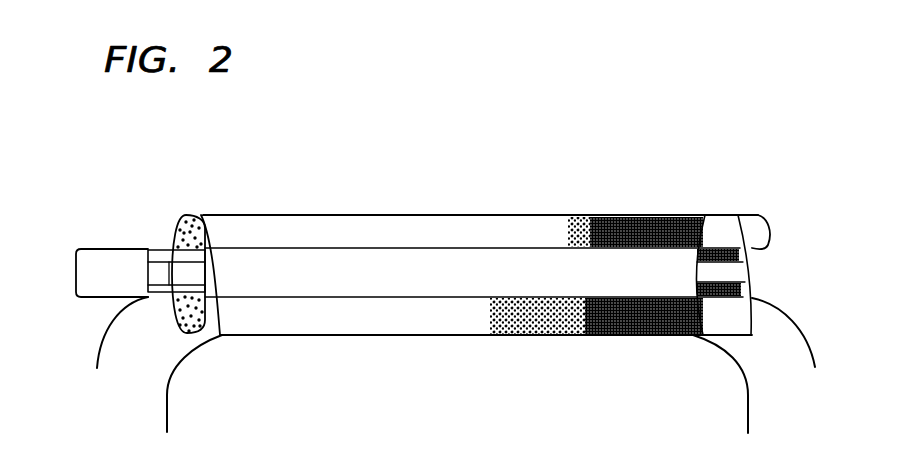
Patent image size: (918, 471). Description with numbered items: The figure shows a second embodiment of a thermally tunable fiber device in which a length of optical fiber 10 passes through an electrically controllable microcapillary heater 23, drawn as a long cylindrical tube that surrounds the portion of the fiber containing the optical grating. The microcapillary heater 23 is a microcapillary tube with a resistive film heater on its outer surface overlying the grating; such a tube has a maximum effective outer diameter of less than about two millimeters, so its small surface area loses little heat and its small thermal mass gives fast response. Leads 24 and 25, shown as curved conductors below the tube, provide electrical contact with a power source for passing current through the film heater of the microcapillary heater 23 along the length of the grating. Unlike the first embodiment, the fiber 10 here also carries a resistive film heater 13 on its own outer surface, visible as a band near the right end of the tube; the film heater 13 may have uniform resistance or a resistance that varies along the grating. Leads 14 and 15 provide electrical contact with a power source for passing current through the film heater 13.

The optical fiber 10 is at (113, 246).
The microcapillary heater 23 is at (415, 215).
The resistive film heater 13 is at (722, 247).
The lead 14 is at (100, 345).
The lead 24 is at (167, 417).
The lead 15 is at (800, 318).
The lead 25 is at (748, 413).